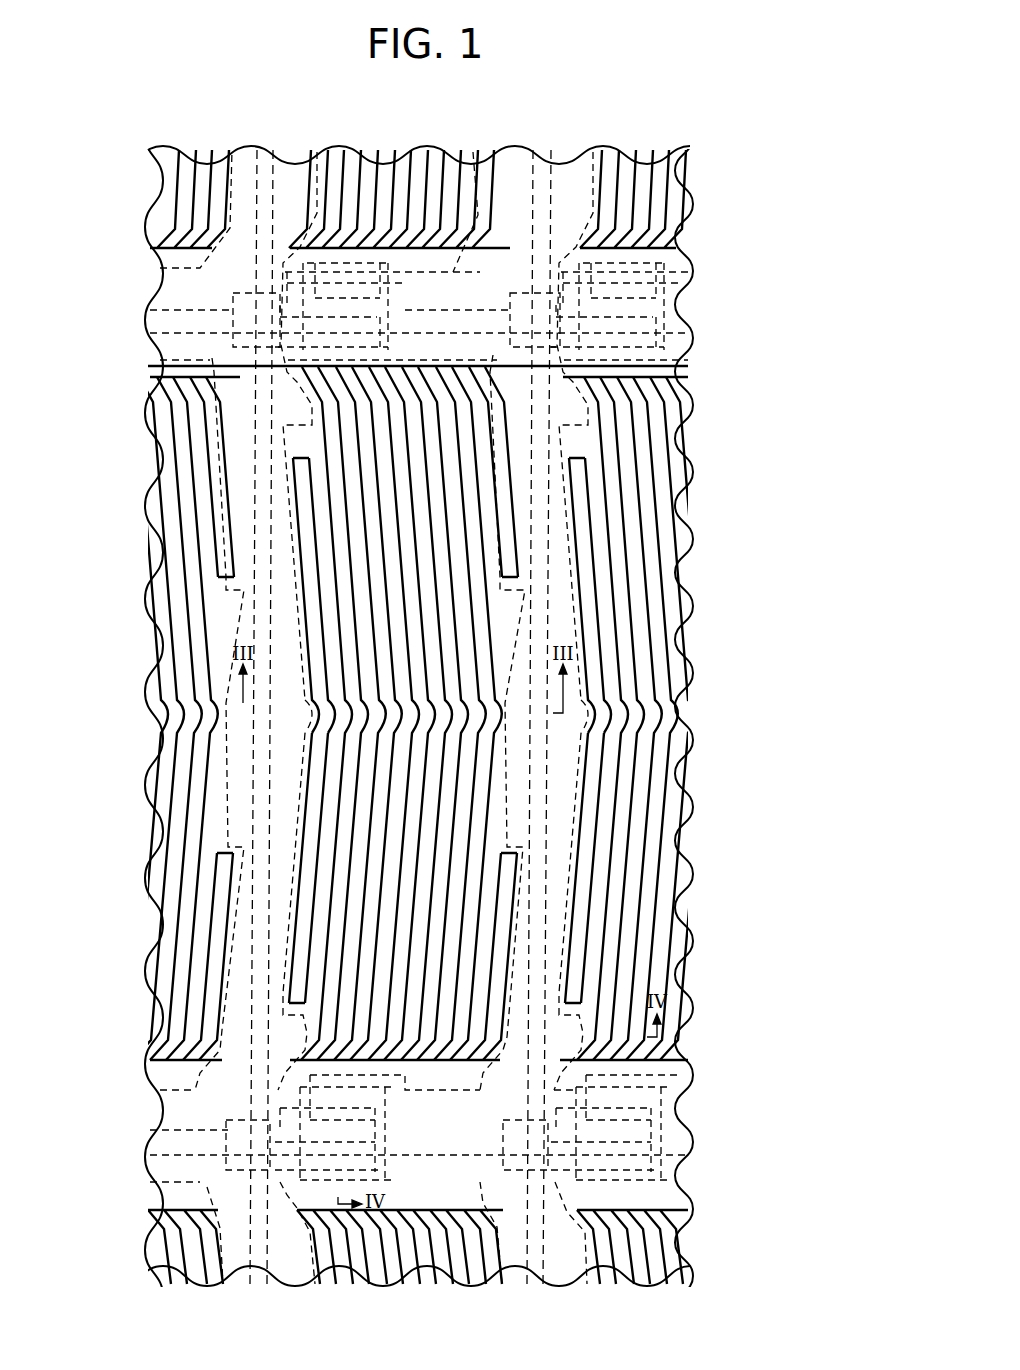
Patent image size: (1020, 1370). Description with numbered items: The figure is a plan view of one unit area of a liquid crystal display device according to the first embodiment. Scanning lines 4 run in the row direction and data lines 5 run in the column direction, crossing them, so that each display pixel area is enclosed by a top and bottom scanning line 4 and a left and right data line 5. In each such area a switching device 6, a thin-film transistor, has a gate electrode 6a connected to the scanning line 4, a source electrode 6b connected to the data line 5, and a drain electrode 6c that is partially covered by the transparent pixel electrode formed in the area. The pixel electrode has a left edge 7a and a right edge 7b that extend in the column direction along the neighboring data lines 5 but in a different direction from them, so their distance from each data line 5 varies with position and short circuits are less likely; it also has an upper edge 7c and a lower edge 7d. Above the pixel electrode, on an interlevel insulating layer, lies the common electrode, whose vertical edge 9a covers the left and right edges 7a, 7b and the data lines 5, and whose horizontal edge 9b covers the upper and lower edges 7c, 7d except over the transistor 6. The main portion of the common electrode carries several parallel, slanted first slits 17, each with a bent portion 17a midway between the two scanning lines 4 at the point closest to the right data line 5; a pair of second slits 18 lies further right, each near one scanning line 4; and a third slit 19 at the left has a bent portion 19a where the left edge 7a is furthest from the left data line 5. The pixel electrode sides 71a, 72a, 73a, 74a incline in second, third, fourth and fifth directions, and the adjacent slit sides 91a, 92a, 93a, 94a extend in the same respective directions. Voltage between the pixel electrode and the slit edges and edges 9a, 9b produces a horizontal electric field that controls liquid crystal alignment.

The scanning line 4 is at (205, 322).
The data line 5 is at (262, 168).
The switching device 6 is at (296, 1184).
The gate electrode 6a is at (400, 1122).
The source electrode 6b is at (318, 1145).
The drain electrode 6c is at (318, 1097).
The left edge 7a is at (300, 793).
The right edge 7b is at (507, 765).
The upper edge 7c is at (473, 152).
The lower edge 7d is at (502, 1284).
The vertical edge 9a is at (285, 1045).
The horizontal edge 9b is at (424, 345).
The first slit 17 is at (310, 370).
The bent portion 17a is at (505, 716).
The second slit 18 is at (490, 385).
The third slit 19 is at (310, 823).
The bent portion 19a is at (298, 782).
The side 71a is at (298, 606).
The side 72a is at (298, 862).
The side 73a is at (318, 722).
The side 74a is at (334, 717).
The side 91a is at (296, 520).
The side 92a is at (300, 900).
The side 93a is at (310, 712).
The side 94a is at (316, 735).